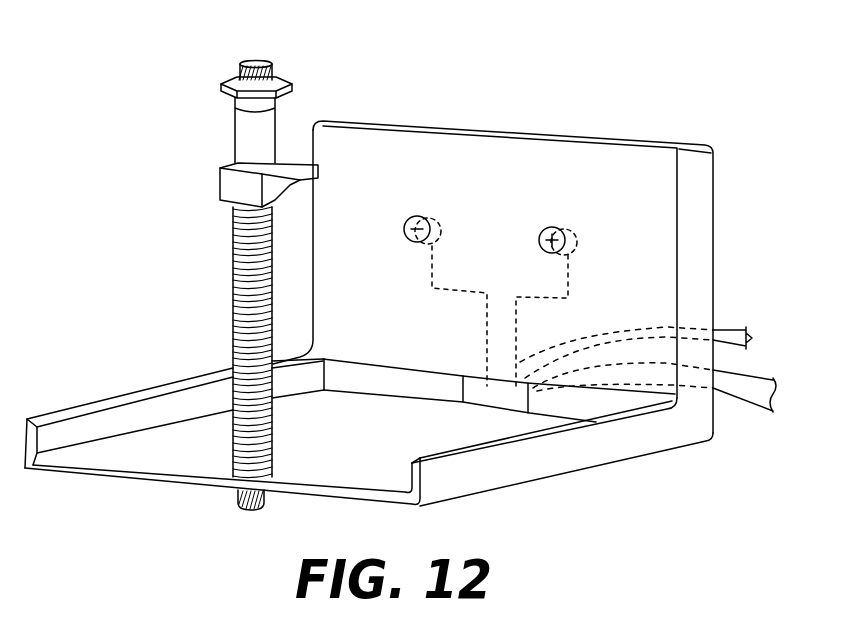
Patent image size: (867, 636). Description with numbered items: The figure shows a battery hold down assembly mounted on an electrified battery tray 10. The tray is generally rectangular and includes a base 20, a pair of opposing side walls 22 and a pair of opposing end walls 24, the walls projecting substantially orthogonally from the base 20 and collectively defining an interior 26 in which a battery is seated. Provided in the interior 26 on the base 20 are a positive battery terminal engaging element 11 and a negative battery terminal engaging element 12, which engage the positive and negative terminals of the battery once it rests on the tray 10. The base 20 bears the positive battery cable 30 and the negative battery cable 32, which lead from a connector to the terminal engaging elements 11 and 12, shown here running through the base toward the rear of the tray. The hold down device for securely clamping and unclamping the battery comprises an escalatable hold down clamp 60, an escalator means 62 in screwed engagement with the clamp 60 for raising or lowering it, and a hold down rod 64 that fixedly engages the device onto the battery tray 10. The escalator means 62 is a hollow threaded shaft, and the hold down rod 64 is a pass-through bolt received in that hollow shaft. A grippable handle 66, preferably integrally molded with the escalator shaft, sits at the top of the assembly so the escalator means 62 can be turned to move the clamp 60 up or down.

The electrified battery tray 10 is at (400, 304).
The positive battery terminal engaging element 11 is at (570, 228).
The negative battery terminal engaging element 12 is at (420, 216).
The base 20 is at (369, 436).
The side wall 22 is at (503, 150).
The end wall 24 is at (117, 395).
The interior 26 is at (336, 460).
The positive battery cable 30 is at (745, 396).
The negative battery cable 32 is at (728, 332).
The escalatable hold down clamp 60 is at (265, 179).
The escalator means 62 is at (233, 240).
The hold down rod 64 is at (278, 73).
The grippable handle 66 is at (221, 88).